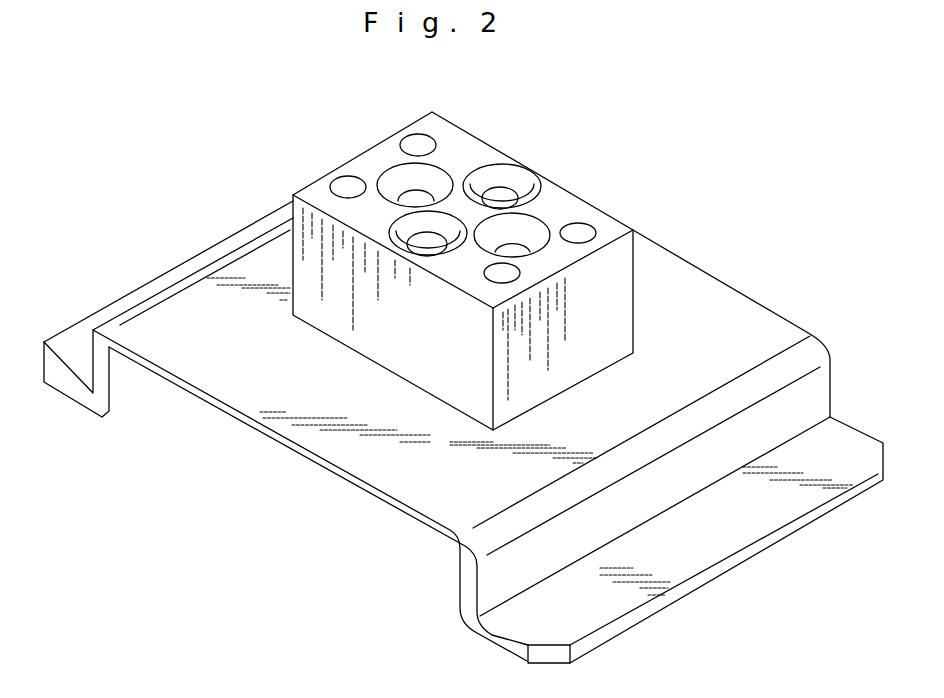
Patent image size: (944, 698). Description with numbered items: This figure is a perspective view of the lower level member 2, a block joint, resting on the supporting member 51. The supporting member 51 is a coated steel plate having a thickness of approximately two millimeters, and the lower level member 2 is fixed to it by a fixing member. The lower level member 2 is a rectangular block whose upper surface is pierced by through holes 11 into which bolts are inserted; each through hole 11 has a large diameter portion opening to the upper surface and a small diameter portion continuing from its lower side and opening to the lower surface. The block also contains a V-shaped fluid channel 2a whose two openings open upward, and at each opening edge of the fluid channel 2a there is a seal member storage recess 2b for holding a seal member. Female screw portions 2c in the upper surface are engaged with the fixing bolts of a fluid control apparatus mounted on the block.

The lower level member 2 is at (625, 277).
The fluid channel 2a is at (437, 250).
The seal member storage recess 2b is at (508, 168).
The female screw portion 2c is at (428, 137).
The through hole 11 is at (545, 224).
The supporting member 51 is at (442, 500).